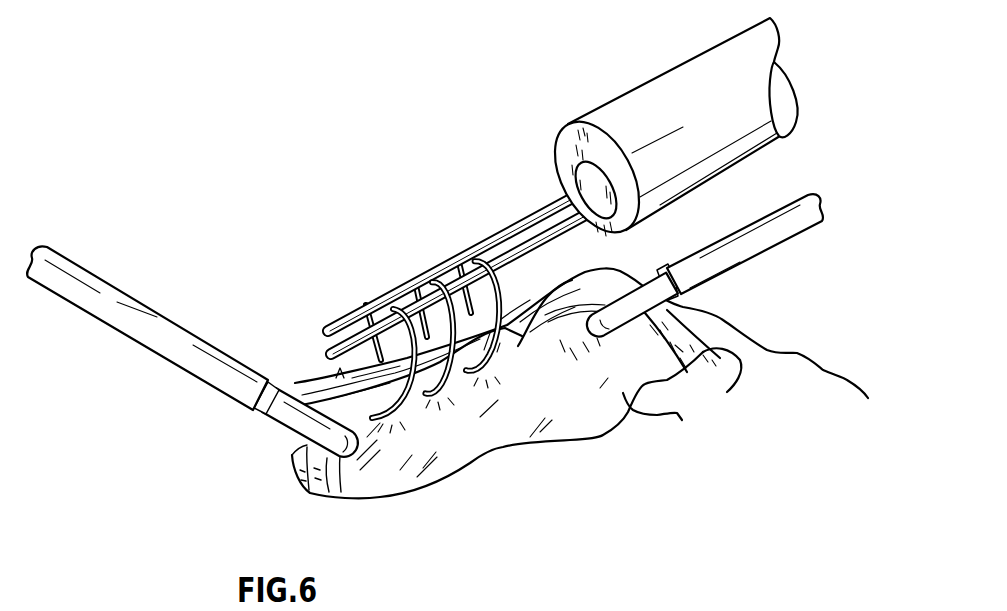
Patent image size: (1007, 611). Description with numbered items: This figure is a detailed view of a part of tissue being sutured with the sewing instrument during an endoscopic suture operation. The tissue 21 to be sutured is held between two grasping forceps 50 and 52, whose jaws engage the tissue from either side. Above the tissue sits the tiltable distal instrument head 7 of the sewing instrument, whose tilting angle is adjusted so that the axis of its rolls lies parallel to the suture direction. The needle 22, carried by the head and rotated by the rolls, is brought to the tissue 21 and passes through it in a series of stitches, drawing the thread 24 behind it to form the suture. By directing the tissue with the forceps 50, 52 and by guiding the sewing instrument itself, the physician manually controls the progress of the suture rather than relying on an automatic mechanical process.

The tiltable distal instrument head 7 is at (683, 75).
The tissue 21 is at (727, 392).
The needle 22 is at (458, 390).
The thread 24 is at (822, 368).
The grasping forceps 50 is at (780, 230).
The grasping forceps 52 is at (185, 335).